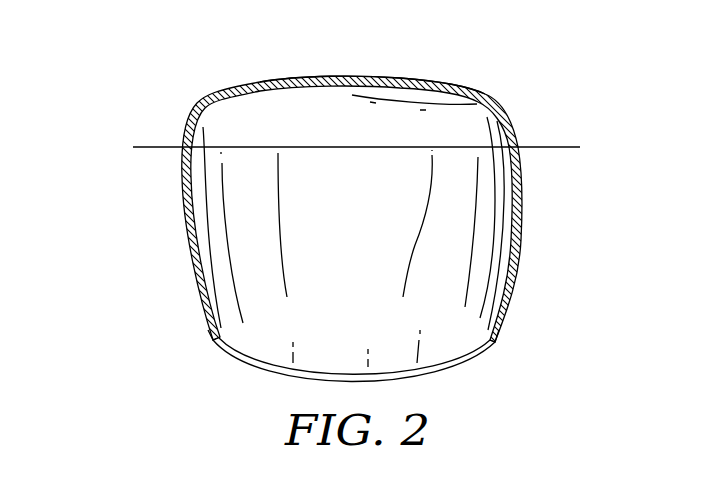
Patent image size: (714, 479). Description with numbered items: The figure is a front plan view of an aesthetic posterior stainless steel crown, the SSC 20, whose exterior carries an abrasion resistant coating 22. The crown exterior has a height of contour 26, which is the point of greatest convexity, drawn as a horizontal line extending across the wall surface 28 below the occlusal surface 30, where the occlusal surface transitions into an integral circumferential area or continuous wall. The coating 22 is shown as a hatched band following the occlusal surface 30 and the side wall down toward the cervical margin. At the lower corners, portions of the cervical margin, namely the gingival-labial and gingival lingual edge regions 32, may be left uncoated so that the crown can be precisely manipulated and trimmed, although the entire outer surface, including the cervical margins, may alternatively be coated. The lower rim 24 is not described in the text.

The aesthetic posterior SSC 20 is at (163, 67).
The abrasion resistant coating 22 is at (481, 94).
The bottom rim 24 is at (452, 362).
The height of contour 26 is at (370, 150).
The wall surface 28 is at (248, 241).
The occlusal surface 30 is at (338, 80).
The gingival-labial and gingival lingual edge regions 32 is at (213, 340).